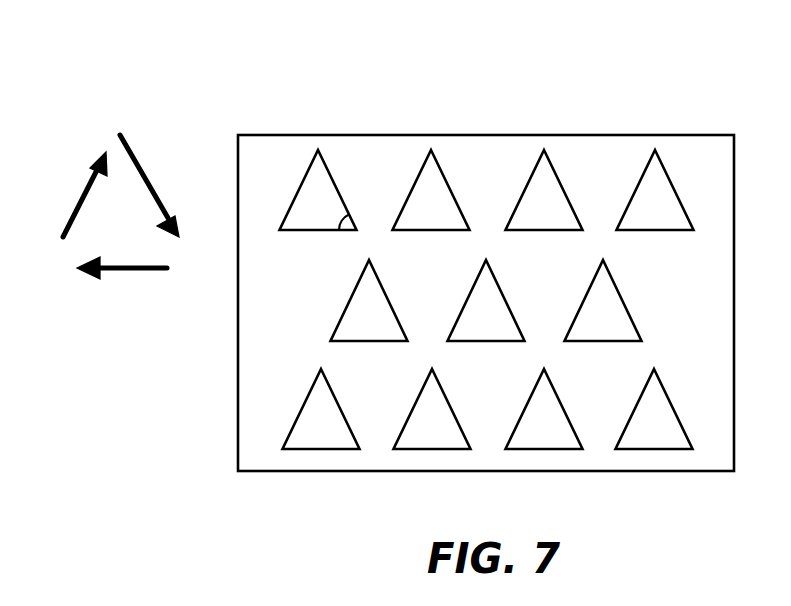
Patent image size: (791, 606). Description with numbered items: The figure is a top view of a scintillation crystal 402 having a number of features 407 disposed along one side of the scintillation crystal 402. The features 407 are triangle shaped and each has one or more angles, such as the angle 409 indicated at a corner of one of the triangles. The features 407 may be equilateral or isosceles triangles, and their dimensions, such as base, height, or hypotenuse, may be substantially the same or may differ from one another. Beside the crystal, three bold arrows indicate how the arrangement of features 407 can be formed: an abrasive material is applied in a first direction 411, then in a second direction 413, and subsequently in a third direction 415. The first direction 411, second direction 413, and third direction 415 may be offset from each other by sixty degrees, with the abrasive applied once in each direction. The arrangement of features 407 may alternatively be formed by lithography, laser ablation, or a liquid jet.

The scintillation crystal 402 is at (262, 83).
The features 407 is at (623, 302).
The angle 409 is at (353, 212).
The first direction 411 is at (152, 182).
The second direction 413 is at (127, 270).
The third direction 415 is at (82, 200).